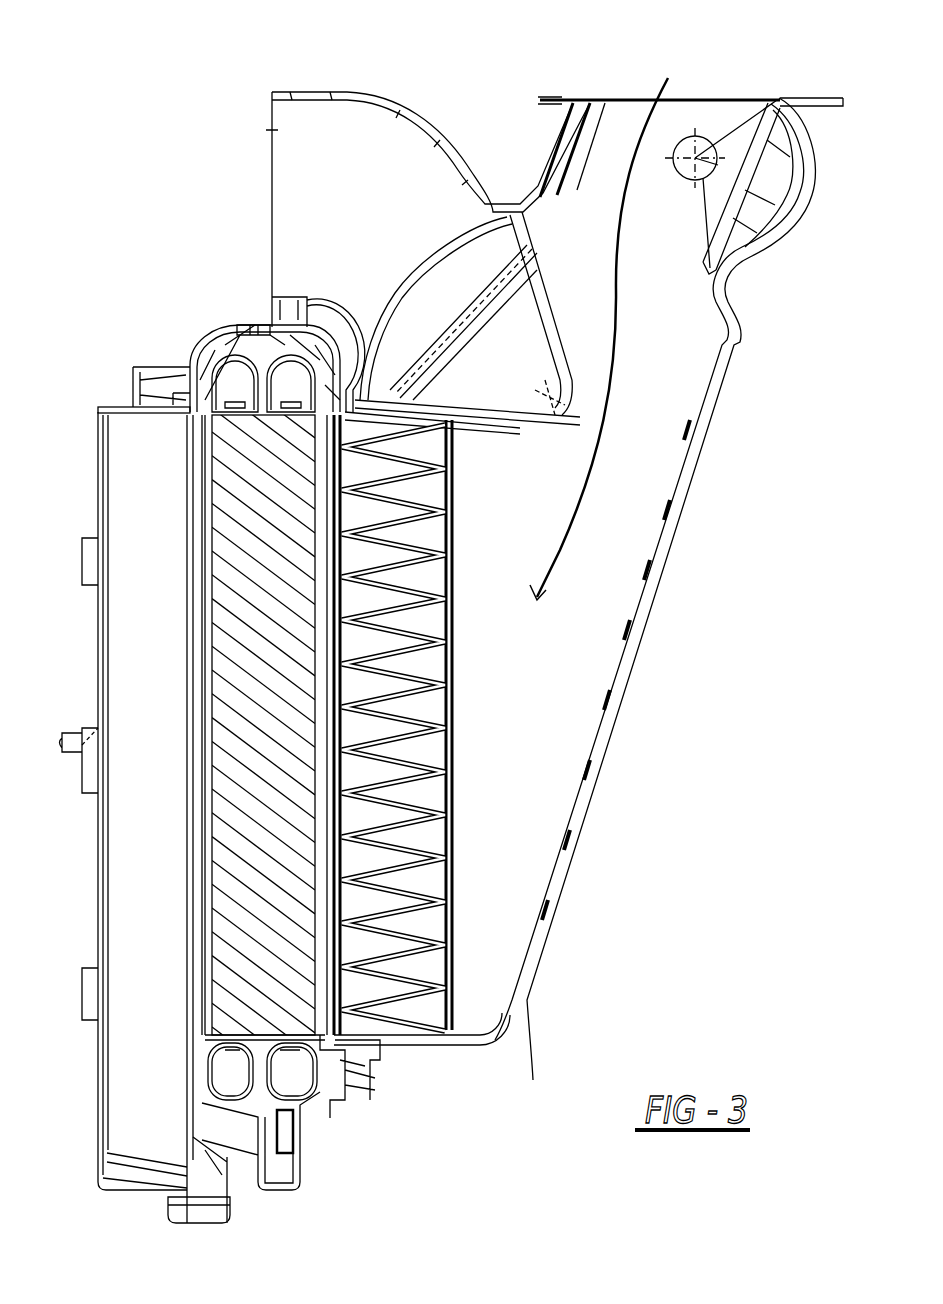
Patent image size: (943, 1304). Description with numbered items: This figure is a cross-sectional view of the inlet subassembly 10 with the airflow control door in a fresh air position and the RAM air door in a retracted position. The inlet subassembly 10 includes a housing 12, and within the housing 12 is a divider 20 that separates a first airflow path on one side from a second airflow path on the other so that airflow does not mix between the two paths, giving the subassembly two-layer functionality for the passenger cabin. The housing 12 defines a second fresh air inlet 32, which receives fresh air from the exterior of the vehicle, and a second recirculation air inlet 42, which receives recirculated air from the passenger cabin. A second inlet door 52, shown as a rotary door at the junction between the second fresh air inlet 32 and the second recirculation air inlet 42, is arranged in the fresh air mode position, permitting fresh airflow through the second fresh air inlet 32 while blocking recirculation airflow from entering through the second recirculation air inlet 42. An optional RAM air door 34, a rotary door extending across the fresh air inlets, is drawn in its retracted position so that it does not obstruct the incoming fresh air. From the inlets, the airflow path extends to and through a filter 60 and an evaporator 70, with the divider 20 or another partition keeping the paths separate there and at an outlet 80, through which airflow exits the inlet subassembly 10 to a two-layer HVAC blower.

The inlet subassembly 10 is at (122, 138).
The housing 12 is at (380, 103).
The divider 20 is at (520, 620).
The second fresh air inlet 32 is at (700, 98).
The RAM air door 34 is at (740, 143).
The second recirculation air inlet 42 is at (290, 193).
The second inlet door 52 is at (490, 292).
The filter 60 is at (407, 908).
The evaporator 70 is at (272, 963).
The outlet 80 is at (105, 918).